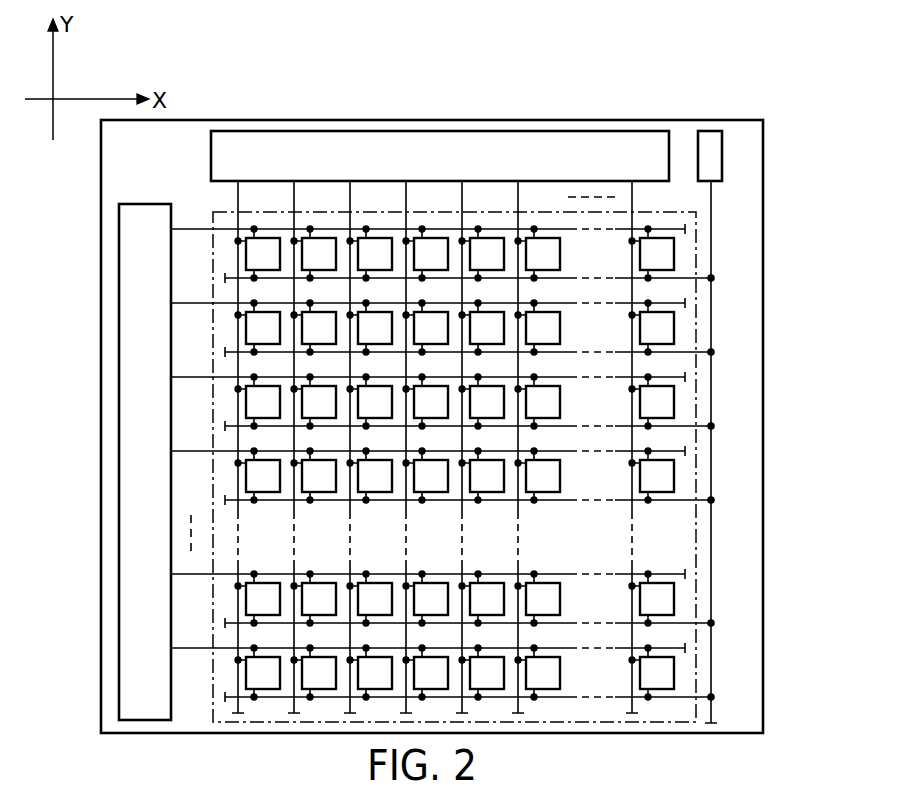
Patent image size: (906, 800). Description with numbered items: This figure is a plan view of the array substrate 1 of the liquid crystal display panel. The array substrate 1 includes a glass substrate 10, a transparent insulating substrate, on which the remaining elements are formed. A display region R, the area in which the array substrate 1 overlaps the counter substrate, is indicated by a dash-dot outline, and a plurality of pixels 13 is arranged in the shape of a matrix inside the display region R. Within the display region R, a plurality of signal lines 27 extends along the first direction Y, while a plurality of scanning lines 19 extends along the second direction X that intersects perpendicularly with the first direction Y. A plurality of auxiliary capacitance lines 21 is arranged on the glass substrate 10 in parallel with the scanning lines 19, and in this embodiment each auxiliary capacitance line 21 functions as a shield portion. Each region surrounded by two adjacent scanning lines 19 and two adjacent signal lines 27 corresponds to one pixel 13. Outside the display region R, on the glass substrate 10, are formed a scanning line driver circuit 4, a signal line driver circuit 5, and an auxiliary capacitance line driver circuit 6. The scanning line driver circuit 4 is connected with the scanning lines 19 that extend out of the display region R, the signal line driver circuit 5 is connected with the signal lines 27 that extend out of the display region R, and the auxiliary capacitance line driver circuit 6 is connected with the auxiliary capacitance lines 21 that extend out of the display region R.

The array substrate 1 is at (458, 402).
The scanning line driver circuit 4 is at (143, 204).
The signal line driver circuit 5 is at (262, 131).
The auxiliary capacitance line driver circuit 6 is at (711, 183).
The glass substrate 10 is at (755, 503).
The pixel 13 is at (265, 263).
The scanning line 19 is at (193, 232).
The auxiliary capacitance line 21 is at (711, 278).
The signal line 27 is at (243, 197).
The display region R is at (697, 528).